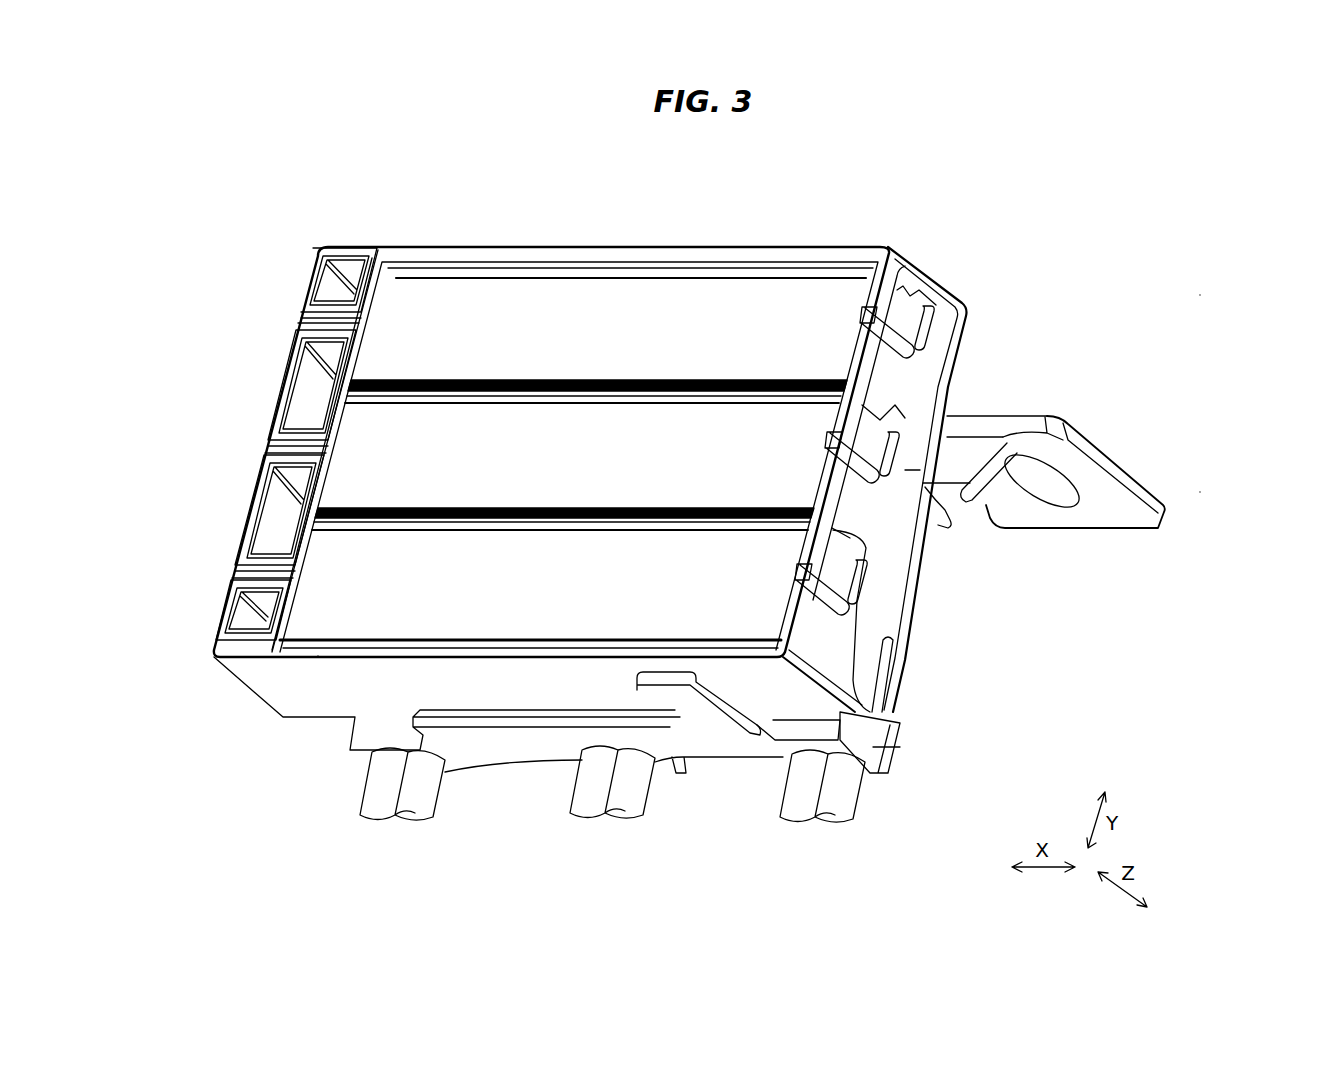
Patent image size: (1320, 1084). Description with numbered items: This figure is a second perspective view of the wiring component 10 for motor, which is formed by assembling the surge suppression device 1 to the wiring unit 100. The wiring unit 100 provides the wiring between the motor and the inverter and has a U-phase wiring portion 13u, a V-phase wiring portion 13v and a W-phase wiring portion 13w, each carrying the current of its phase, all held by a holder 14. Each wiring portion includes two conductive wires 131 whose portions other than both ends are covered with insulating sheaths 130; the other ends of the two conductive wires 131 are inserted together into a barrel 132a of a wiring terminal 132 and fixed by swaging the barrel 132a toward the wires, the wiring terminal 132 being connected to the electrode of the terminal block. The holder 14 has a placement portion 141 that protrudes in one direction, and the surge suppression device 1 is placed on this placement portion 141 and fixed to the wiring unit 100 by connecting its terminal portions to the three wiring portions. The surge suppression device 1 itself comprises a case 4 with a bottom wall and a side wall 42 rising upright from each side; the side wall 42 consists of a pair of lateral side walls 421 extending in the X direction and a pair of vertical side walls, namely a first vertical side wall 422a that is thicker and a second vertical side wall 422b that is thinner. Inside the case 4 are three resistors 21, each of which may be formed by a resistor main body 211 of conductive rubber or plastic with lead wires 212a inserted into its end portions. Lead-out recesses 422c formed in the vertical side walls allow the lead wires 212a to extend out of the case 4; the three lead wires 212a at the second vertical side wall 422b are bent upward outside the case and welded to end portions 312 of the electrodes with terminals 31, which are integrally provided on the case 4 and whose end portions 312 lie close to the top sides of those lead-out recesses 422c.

The surge suppression device 1 is at (197, 235).
The case 4 is at (531, 246).
The wiring component for motor 10 is at (1212, 291).
The U-phase wiring portion 13u is at (396, 833).
The V-phase wiring portion 13v is at (603, 833).
The W-phase wiring portion 13w is at (813, 833).
The holder 14 is at (890, 748).
The resistor 21 is at (538, 580).
The electrode with terminal 31 is at (912, 292).
The side wall 42 is at (738, 246).
The wiring unit 100 is at (1212, 488).
The insulating sheath 130 is at (387, 787).
The conductive wire 131 is at (887, 653).
The wiring terminal 132 is at (1125, 472).
The barrel 132a is at (877, 523).
The placement portion 141 is at (682, 700).
The resistor main body 211 is at (613, 580).
The lead wire 212a is at (920, 316).
The end portion 312 is at (918, 305).
The lateral side wall 421 is at (474, 246).
The first vertical side wall 422a is at (270, 405).
The second vertical side wall 422b is at (928, 547).
The lead-out recess 422c is at (320, 330).